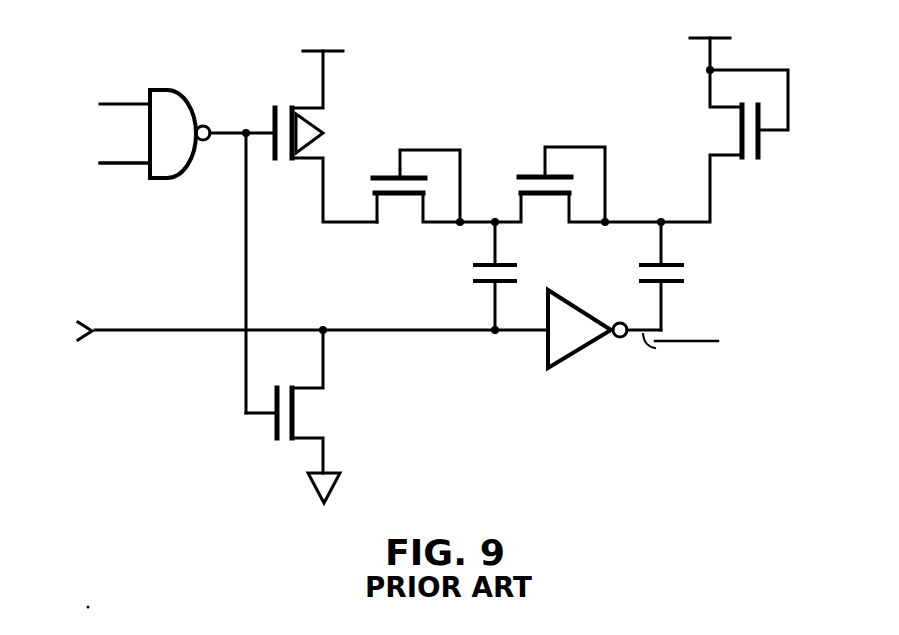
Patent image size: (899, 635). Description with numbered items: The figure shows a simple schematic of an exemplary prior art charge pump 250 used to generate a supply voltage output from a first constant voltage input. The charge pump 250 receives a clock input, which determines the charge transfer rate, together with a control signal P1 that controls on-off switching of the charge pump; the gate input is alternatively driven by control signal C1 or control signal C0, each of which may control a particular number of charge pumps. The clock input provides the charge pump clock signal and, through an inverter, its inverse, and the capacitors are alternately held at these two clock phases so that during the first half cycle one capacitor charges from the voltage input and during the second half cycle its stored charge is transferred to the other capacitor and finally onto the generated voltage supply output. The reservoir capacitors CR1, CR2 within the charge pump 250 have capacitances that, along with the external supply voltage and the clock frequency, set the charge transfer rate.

The charge pump 250 is at (645, 467).
The reservoir capacitor CR1 is at (691, 276).
The reservoir capacitor CR2 is at (462, 276).
The control signal P1 is at (107, 104).
The control signal C1 is at (107, 163).
The control signal C0 is at (96, 189).